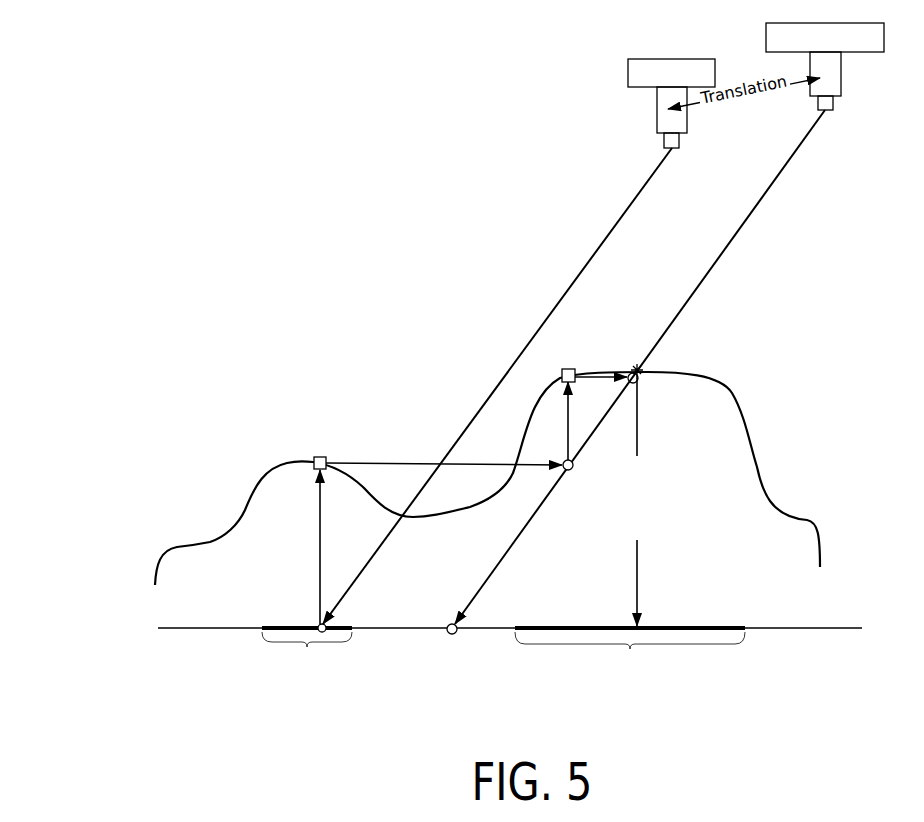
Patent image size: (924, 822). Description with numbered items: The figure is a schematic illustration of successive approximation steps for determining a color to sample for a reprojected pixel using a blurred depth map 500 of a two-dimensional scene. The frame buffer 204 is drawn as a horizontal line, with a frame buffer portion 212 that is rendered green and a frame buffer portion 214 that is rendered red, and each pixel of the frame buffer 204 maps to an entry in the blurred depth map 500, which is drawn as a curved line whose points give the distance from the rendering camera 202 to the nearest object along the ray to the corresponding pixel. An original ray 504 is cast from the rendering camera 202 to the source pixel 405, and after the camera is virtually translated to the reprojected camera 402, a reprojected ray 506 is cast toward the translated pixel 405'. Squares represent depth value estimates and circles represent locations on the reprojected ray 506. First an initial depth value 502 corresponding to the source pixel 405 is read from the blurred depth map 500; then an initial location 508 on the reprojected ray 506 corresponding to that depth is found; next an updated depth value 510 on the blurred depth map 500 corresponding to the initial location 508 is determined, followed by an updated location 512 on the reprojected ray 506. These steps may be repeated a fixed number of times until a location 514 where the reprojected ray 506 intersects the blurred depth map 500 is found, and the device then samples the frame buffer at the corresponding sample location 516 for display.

The blurred depth map 500 is at (173, 547).
The initial depth value 502 is at (322, 457).
The original ray 504 is at (585, 265).
The reprojected ray 506 is at (708, 268).
The initial location 508 is at (572, 470).
The updated depth value 510 is at (568, 367).
The updated location 512 is at (640, 375).
The intersection location 514 is at (635, 367).
The sample location 516 is at (645, 622).
The rendering camera 202 is at (689, 125).
The reprojected camera 402 is at (842, 87).
The frame buffer 204 is at (177, 630).
The frame buffer portion 212 is at (307, 651).
The frame buffer portion 214 is at (630, 652).
The source pixel 405 is at (353, 654).
The translated pixel 405' is at (485, 654).